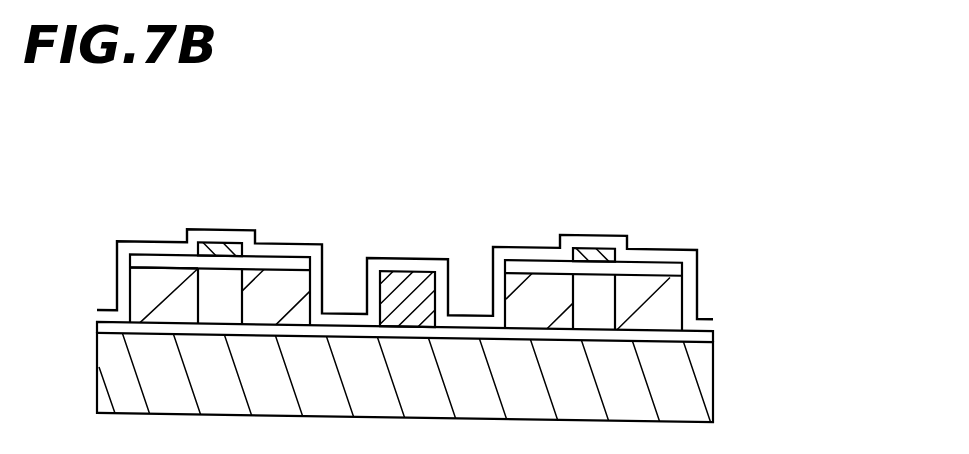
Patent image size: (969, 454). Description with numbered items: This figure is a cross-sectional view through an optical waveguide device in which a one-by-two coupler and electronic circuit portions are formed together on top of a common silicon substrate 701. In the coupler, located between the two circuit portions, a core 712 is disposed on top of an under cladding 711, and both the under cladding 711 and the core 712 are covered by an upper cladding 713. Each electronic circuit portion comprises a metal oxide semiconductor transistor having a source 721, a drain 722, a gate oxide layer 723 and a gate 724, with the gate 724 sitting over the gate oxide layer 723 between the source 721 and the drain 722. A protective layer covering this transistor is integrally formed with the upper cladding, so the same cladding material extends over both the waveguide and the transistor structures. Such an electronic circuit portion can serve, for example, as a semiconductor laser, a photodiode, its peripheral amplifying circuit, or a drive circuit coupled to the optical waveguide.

The silicon substrate 701 is at (690, 375).
The under cladding 711 is at (690, 337).
The core 712 is at (402, 288).
The upper cladding 713 is at (690, 298).
The source 721 is at (293, 258).
The drain 722 is at (140, 287).
The gate oxide layer 723 is at (151, 262).
The gate 724 is at (217, 258).